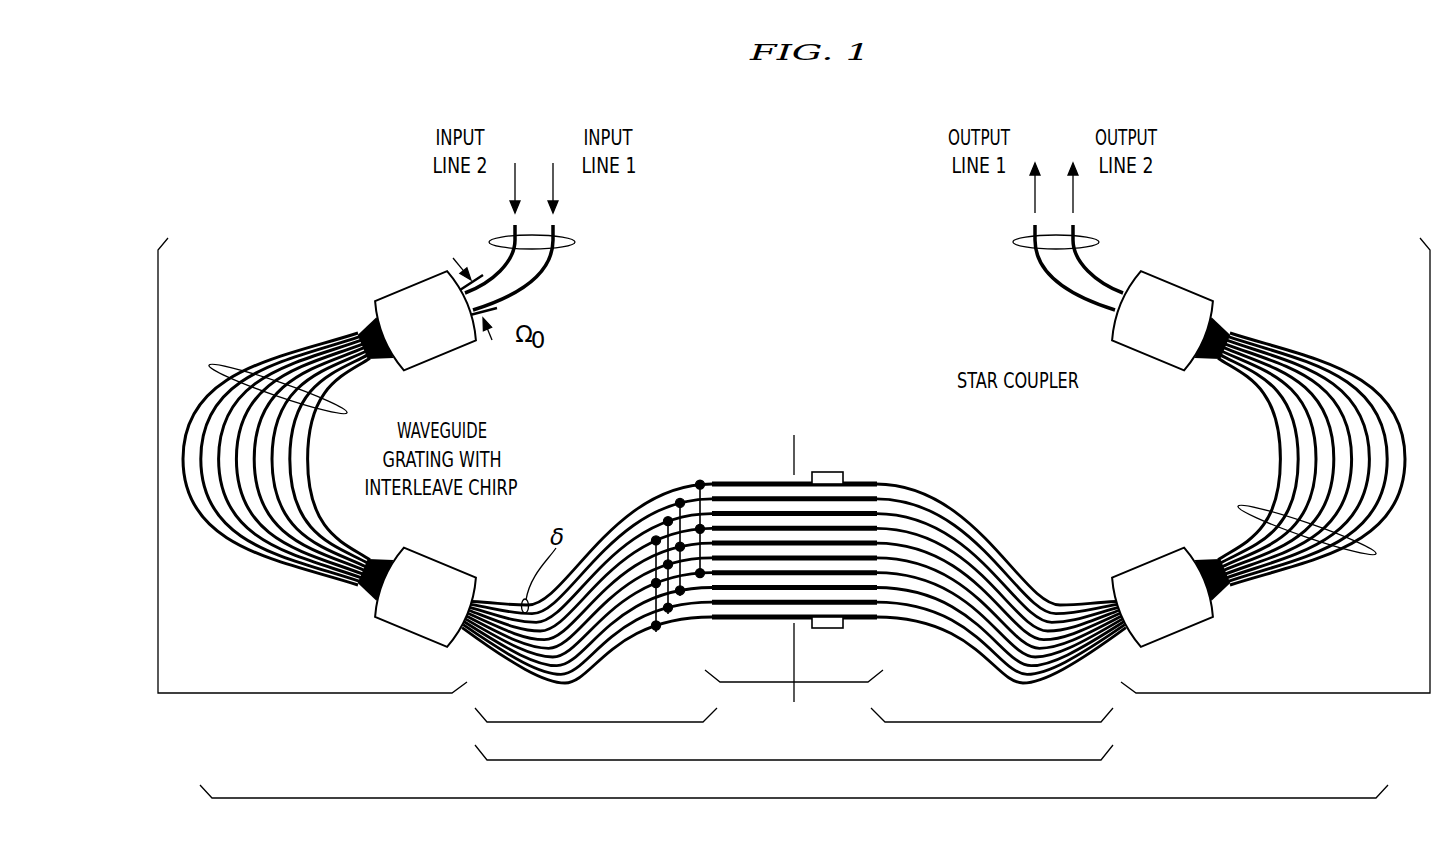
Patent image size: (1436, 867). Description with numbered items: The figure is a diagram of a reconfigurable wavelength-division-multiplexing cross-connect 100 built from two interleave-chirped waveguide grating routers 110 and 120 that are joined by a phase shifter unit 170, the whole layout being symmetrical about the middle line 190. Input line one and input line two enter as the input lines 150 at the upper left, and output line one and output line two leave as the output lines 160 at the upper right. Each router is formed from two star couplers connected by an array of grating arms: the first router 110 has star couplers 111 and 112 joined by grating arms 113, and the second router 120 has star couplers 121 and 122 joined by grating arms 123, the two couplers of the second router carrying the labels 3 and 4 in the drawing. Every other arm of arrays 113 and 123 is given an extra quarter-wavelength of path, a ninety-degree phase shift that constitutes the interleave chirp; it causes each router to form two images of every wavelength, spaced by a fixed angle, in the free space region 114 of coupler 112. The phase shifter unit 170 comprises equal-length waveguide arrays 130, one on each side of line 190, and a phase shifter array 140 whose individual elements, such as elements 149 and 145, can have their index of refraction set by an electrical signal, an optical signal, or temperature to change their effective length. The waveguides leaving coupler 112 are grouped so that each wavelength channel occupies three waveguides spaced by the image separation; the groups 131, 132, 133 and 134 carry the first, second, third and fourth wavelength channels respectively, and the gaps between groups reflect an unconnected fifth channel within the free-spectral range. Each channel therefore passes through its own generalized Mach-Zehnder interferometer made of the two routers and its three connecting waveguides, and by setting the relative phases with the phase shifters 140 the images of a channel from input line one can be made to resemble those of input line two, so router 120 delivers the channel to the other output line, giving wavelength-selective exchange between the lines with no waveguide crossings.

The WDM cross-connect 100 is at (794, 807).
The interleave-chirped waveguide grating router 110 is at (312, 482).
The star coupler 111 is at (417, 284).
The star coupler 112 is at (412, 630).
The array of grating arms 113 is at (212, 366).
The free space region 114 is at (480, 598).
The interleave-chirped waveguide grating router 120 is at (1275, 482).
The output star coupler of second grating 121 is at (1178, 282).
The star coupler 122 is at (1146, 556).
The array of grating arms 123 is at (1240, 508).
The waveguide array 130 is at (794, 619).
The group of waveguides 131 is at (657, 640).
The group of waveguides 132 is at (669, 620).
The group of waveguides 133 is at (680, 496).
The group of waveguides 134 is at (701, 484).
The phase shifter array 140 is at (794, 598).
The phase shifter electrode 145 is at (850, 628).
The phase shifter element control 149 is at (834, 472).
The input lines 150 is at (575, 242).
The output lines 160 is at (1013, 242).
The phase shifter unit 170 is at (794, 768).
The middle line 190 is at (795, 588).
The phase shifter element 3 is at (1229, 632).
The port 4 of star coupler 121 4 is at (1229, 294).